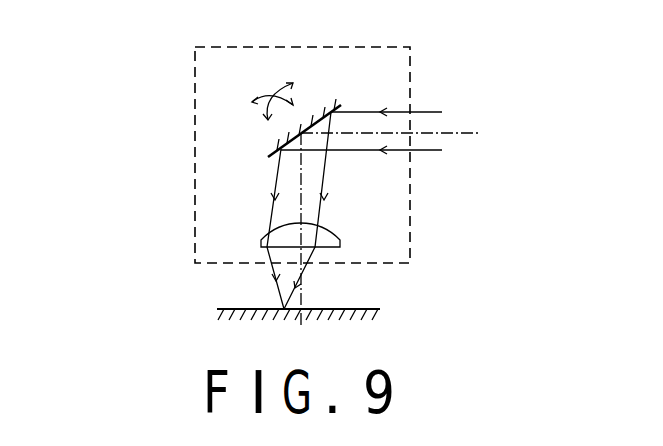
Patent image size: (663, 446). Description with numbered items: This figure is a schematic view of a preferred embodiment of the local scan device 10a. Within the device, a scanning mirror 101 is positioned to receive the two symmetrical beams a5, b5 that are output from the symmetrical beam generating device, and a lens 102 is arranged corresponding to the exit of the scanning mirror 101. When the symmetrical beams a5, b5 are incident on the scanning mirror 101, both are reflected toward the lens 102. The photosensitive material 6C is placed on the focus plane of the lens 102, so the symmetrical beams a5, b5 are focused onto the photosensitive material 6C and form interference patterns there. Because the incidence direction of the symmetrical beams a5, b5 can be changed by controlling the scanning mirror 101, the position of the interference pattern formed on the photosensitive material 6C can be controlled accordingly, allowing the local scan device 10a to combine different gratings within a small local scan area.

The local scan device 10a is at (193, 95).
The scanning mirror 101 is at (347, 103).
The lens 102 is at (332, 231).
The symmetrical beam a5 is at (406, 112).
The symmetrical beam b5 is at (382, 150).
The photosensitive material 6C is at (367, 309).